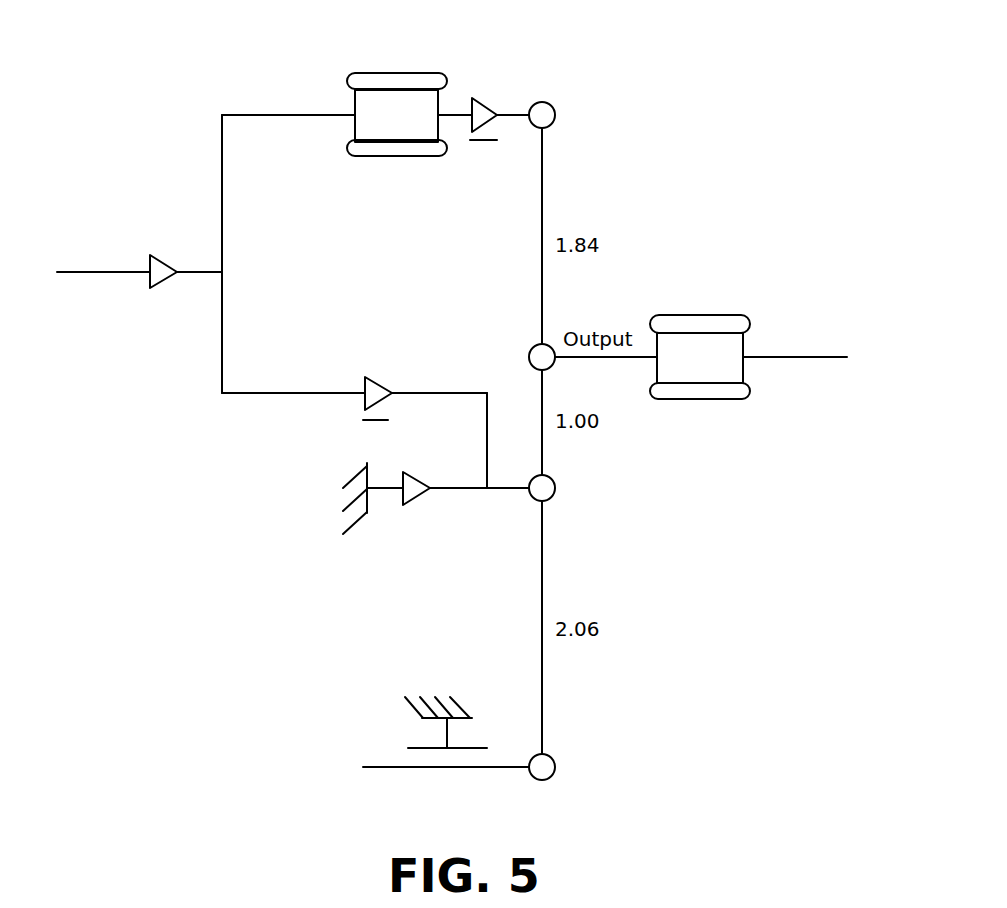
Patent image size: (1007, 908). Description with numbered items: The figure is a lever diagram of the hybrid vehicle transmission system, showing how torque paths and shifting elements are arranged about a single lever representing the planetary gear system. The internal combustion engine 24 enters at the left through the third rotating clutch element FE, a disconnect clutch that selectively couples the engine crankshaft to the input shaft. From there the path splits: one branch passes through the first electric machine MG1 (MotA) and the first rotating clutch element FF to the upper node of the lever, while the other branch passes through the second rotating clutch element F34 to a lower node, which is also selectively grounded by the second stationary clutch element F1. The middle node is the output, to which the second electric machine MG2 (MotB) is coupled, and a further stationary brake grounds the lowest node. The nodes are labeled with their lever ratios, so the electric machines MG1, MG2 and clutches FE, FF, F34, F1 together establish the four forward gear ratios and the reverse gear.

The internal combustion engine 24 is at (70, 223).
The first electric machine MG1 is at (395, 88).
The second electric machine MG2 is at (687, 386).
The third rotating clutch element FE is at (182, 256).
The first rotating clutch element FF is at (483, 105).
The second rotating clutch element F34 is at (354, 415).
The second stationary clutch element F1 is at (436, 502).